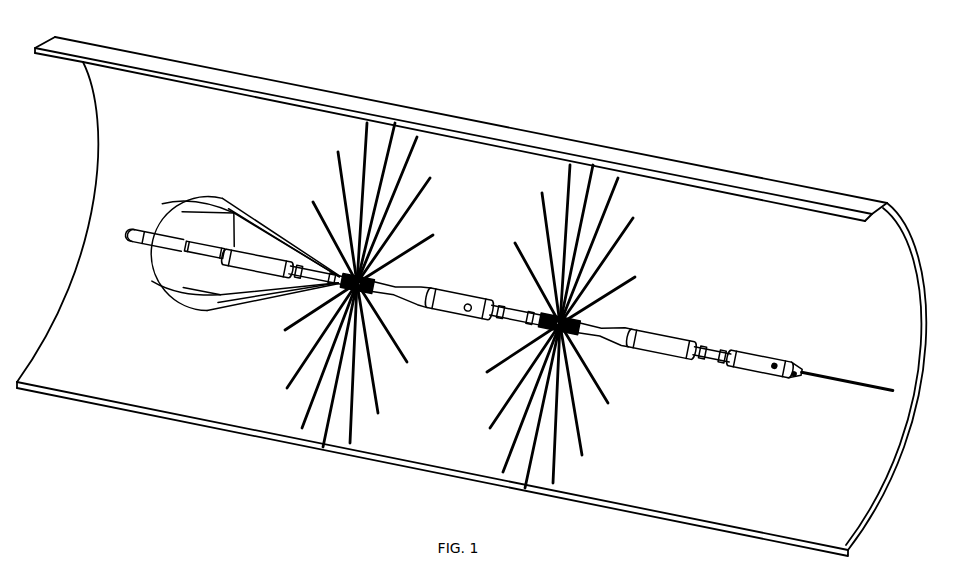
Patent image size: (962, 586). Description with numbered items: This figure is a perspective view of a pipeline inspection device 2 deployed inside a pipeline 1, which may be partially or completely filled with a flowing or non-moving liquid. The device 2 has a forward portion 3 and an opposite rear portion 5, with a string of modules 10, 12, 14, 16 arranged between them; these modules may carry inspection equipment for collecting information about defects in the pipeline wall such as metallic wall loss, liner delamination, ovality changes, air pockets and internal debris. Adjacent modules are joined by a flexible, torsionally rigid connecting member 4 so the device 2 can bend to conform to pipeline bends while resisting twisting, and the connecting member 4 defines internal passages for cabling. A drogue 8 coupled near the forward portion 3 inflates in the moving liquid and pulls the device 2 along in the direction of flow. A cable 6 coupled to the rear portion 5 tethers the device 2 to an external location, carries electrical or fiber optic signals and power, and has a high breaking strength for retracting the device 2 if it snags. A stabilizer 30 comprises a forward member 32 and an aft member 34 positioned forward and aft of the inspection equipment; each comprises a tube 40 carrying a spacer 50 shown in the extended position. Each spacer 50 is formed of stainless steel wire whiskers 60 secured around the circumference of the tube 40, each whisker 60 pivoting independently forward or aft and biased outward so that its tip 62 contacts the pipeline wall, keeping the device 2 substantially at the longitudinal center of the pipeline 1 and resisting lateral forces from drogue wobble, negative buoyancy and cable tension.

The pipeline 1 is at (471, 296).
The pipeline inspection device 2 is at (198, 137).
The forward portion 3 is at (135, 232).
The connecting member 4 is at (207, 252).
The rear portion 5 is at (795, 377).
The cable 6 is at (847, 380).
The drogue 8 is at (202, 198).
The module 10 is at (145, 242).
The module 12 is at (257, 267).
The module 14 is at (458, 303).
The module 16 is at (758, 365).
The stabilizer 30 is at (452, 230).
The forward member 32 is at (371, 285).
The aft member 34 is at (576, 326).
The tube 40 is at (377, 277).
The spacer 50 is at (420, 200).
The whisker 60 is at (618, 247).
The tip 62 is at (618, 178).